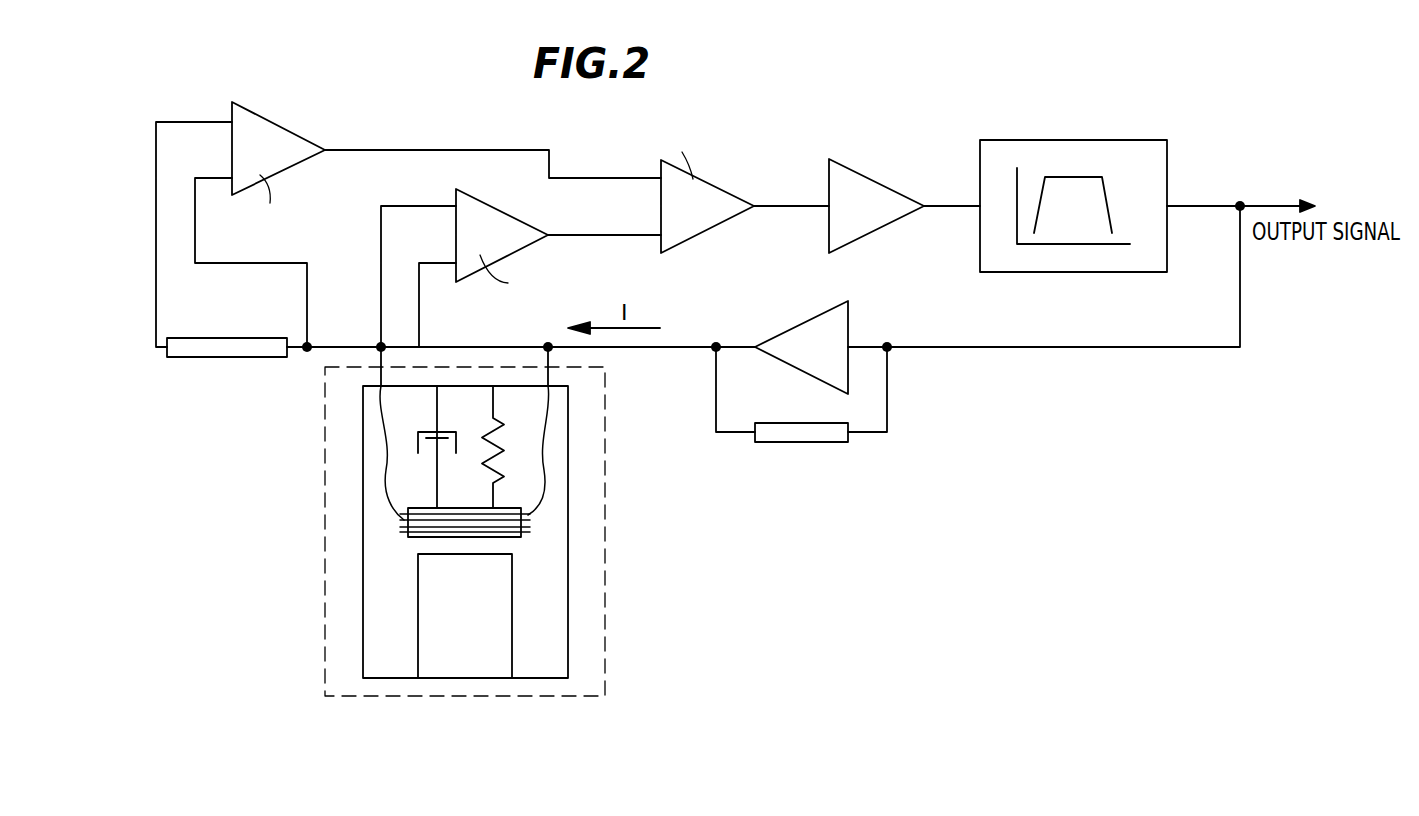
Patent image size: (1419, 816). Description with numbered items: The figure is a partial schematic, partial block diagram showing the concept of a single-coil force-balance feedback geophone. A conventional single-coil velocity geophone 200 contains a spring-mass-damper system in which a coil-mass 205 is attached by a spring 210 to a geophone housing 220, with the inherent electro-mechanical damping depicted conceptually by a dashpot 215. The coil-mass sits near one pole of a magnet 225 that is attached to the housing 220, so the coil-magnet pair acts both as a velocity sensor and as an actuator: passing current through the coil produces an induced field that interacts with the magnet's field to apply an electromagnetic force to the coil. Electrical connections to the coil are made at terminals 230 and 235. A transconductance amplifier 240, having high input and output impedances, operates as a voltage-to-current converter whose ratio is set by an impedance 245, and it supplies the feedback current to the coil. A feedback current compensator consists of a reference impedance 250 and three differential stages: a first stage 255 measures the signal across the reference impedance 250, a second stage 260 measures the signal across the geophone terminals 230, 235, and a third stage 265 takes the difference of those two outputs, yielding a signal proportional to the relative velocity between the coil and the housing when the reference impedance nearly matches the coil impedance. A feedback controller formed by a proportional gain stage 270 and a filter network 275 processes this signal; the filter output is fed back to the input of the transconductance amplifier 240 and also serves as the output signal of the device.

The single-coil velocity geophone 200 is at (605, 683).
The coil-mass 205 is at (530, 525).
The spring 210 is at (500, 467).
The dashpot 215 is at (418, 450).
The geophone housing 220 is at (380, 678).
The magnet 225 is at (512, 601).
The terminal 230 is at (375, 378).
The terminal 235 is at (548, 377).
The amplifier 240 is at (812, 333).
The impedance 245 is at (812, 442).
The reference impedance 250 is at (195, 358).
The first differential stage 255 is at (268, 133).
The second differential stage 260 is at (480, 205).
The third differential stage 265 is at (706, 222).
The proportional gain stage 270 is at (862, 182).
The filter network 275 is at (1053, 140).